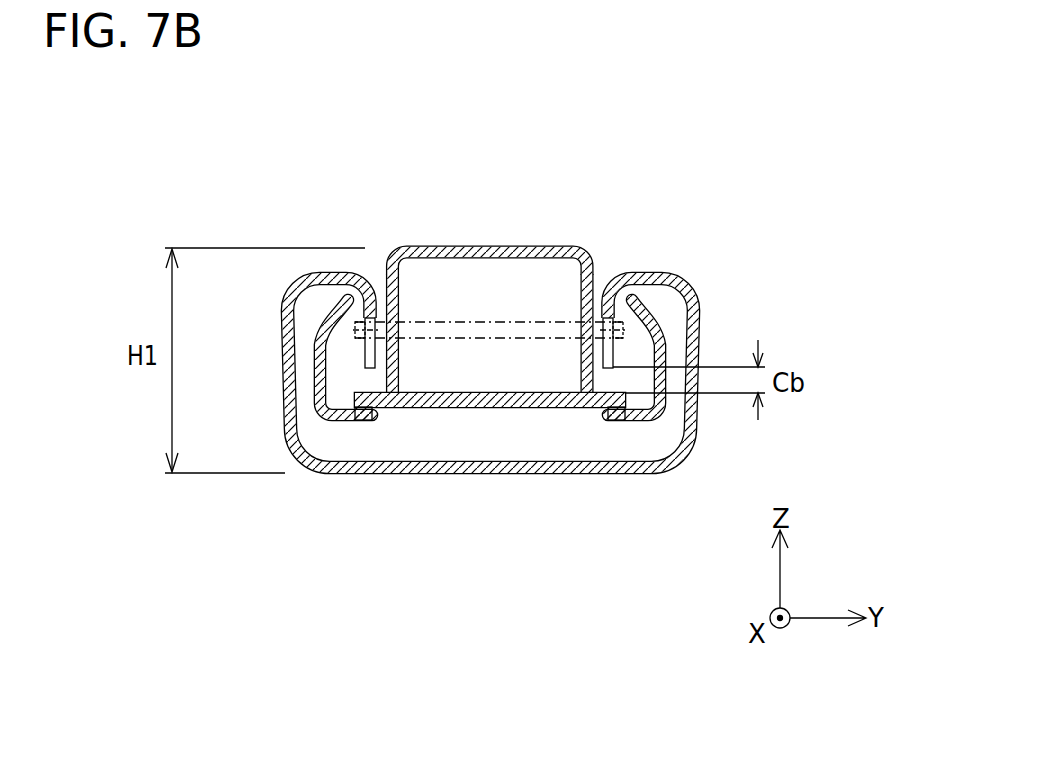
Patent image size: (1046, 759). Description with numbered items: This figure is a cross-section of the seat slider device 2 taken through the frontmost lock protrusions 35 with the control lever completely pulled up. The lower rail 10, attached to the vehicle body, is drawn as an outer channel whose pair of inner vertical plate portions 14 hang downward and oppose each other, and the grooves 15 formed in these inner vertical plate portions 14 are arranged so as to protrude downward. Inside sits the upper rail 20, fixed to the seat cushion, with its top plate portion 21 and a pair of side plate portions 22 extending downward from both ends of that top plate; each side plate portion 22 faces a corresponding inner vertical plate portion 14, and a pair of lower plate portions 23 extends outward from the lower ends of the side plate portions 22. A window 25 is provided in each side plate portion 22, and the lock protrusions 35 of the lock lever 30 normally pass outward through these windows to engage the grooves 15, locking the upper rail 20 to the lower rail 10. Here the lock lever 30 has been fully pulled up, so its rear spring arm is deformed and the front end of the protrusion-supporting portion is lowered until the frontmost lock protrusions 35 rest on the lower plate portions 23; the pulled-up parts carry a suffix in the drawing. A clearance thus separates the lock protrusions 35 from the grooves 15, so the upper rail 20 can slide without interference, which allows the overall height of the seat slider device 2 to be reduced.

The seat slider device 2 is at (292, 152).
The lower rail 10 is at (277, 237).
The inner vertical plate portion 14 is at (365, 320).
The groove 15 is at (368, 350).
The upper rail 20 is at (491, 280).
The top plate portion 21 is at (438, 250).
The side plate portion 22 is at (372, 272).
The lower plate portion 23 is at (360, 413).
The window 25 is at (392, 377).
The lock lever 30 is at (492, 310).
The lock protrusion 35 is at (340, 308).